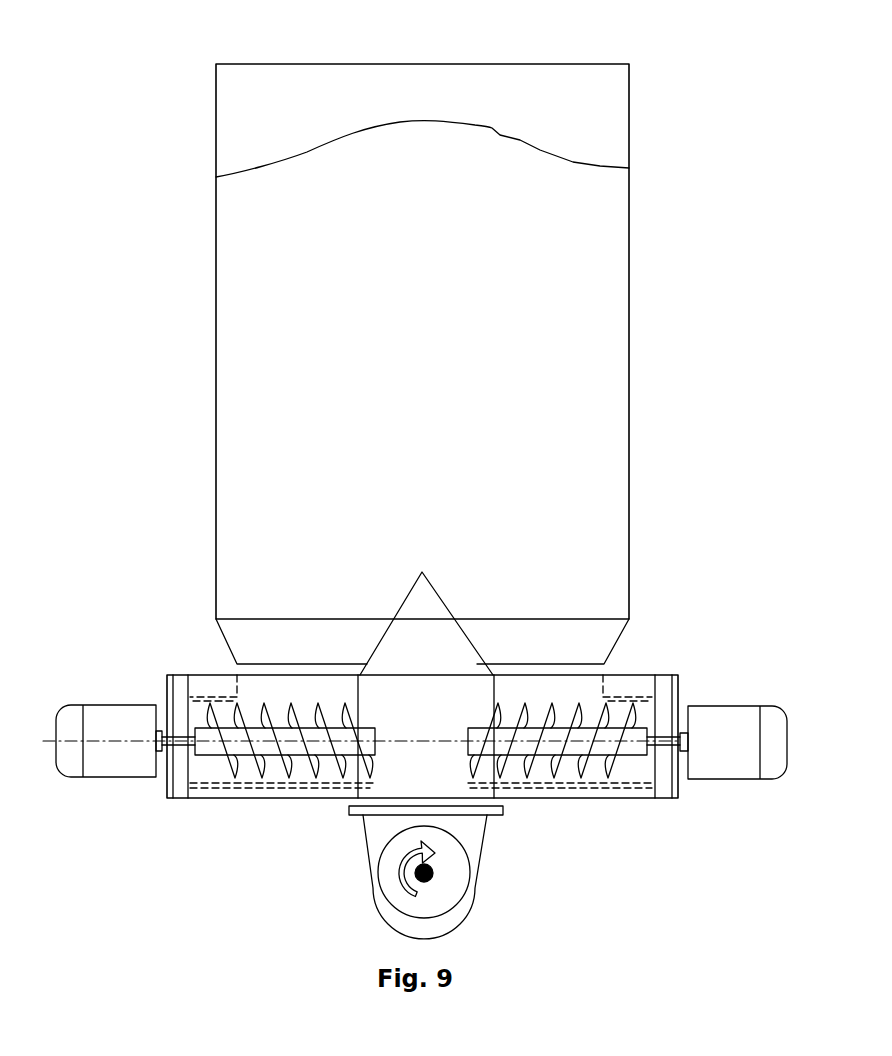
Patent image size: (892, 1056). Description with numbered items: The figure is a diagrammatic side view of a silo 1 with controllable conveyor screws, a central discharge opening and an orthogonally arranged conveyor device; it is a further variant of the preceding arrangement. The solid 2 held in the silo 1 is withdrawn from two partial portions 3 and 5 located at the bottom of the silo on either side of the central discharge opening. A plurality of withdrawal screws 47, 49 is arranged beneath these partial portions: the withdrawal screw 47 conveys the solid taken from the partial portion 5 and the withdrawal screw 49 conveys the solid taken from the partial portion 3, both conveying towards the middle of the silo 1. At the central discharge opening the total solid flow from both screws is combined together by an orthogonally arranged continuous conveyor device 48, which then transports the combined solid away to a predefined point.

The silo 1 is at (629, 110).
The bulk material 2 is at (312, 158).
The partial portion 3 is at (602, 678).
The partial portion 5 is at (267, 648).
The withdrawal screw 47 is at (277, 765).
The withdrawal screw 49 is at (583, 770).
The continuous conveyor device 48 is at (457, 888).